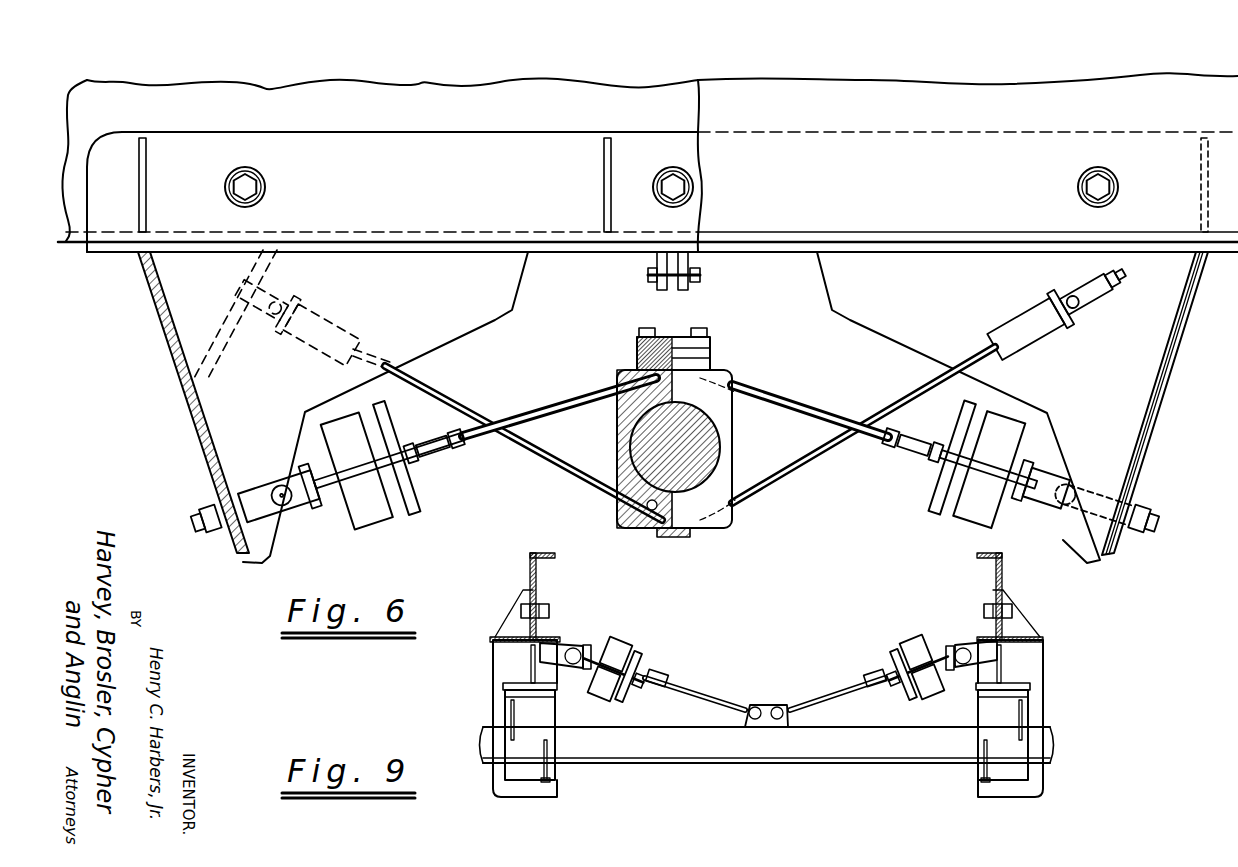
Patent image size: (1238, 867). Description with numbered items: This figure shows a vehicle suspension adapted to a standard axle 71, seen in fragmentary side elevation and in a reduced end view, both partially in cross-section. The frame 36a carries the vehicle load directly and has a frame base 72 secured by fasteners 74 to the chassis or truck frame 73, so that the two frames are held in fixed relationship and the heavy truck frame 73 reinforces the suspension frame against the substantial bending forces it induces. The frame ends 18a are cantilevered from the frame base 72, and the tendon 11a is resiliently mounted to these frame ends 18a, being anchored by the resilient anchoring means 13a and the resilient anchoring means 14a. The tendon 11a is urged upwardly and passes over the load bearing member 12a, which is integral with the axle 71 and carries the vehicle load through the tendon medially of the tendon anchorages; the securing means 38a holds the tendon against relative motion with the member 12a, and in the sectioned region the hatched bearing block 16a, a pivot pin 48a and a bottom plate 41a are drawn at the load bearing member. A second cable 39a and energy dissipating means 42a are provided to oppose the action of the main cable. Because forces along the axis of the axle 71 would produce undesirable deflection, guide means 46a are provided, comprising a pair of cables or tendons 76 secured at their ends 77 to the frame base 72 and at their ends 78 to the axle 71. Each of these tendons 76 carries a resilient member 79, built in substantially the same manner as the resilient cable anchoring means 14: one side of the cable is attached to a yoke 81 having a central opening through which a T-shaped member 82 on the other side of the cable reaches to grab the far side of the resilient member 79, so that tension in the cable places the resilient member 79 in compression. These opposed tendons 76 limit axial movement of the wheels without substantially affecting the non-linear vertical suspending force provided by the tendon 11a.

In FIG. 6, the resilient cable anchoring means 14 is at (248, 178).
In FIG. 6, the frame 36a is at (843, 231).
In FIG. 6, the ends 77 is at (645, 277).
In FIG. 9, the ends 77 is at (583, 643).
In FIG. 6, the energy dissipating means 42a is at (345, 318).
In FIG. 6, the frame base 72 is at (1175, 245).
In FIG. 6, the truck frame 73 is at (185, 325).
In FIG. 6, the frame ends 18a is at (1153, 410).
In FIG. 6, the securing means 38a is at (671, 407).
In FIG. 6, the tendon 11a is at (567, 365).
In FIG. 9, the tendon 11a is at (505, 720).
In FIG. 6, the hatched bearing block 16a is at (622, 372).
In FIG. 6, the load bearing member 12a is at (722, 397).
In FIG. 6, the axle 71 is at (700, 452).
In FIG. 9, the axle 71 is at (822, 748).
In FIG. 6, the second cable 39a is at (795, 468).
In FIG. 9, the second cable 39a is at (555, 765).
In FIG. 6, the resilient anchoring means 13a is at (925, 483).
In FIG. 6, the resilient anchoring means 14a is at (345, 525).
In FIG. 6, the pivot pin 48a is at (656, 508).
In FIG. 6, the bottom plate 41a is at (687, 537).
In FIG. 9, the fasteners 74 is at (552, 610).
In FIG. 9, the T-shaped member 82 is at (618, 645).
In FIG. 9, the yoke 81 is at (763, 689).
In FIG. 9, the resilient member 79 is at (637, 650).
In FIG. 9, the tendons 76 is at (690, 700).
In FIG. 9, the ends 78 is at (766, 730).
In FIG. 9, the guide means 46a is at (790, 641).